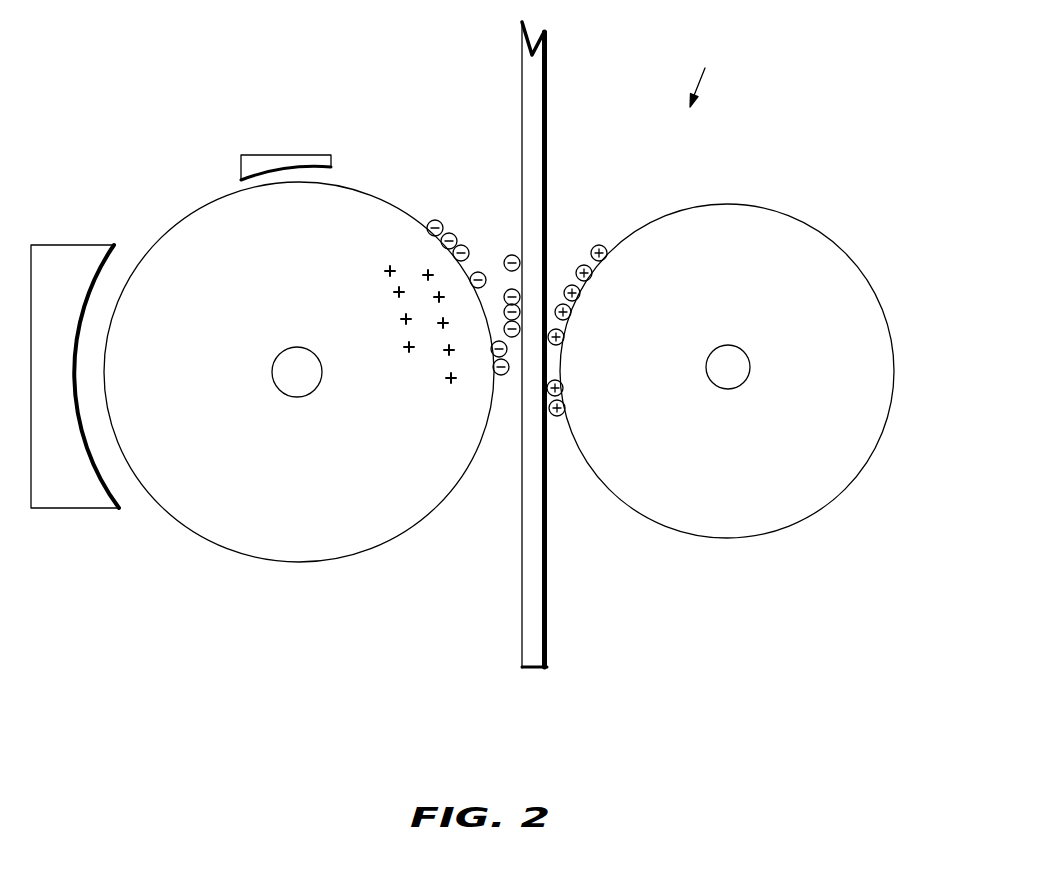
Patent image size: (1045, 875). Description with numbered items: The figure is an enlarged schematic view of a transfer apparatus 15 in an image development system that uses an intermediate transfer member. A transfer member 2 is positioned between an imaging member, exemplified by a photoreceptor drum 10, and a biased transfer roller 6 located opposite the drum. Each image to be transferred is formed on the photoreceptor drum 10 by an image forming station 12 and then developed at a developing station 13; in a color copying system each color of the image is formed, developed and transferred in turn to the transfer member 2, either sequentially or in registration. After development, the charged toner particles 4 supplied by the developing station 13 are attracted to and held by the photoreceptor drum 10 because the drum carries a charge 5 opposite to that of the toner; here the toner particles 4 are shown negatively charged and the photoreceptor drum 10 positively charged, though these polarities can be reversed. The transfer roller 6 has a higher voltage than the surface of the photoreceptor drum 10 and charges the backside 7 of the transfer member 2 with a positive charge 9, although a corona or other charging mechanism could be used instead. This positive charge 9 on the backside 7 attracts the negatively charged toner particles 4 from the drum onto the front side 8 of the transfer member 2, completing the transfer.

The transfer member 2 is at (532, 147).
The charged toner particles 4 is at (440, 225).
The charge 5 is at (391, 266).
The transfer roller 6 is at (680, 517).
The backside 7 is at (544, 60).
The front side 8 is at (518, 125).
The positive charge 9 is at (601, 246).
The photoreceptor drum 10 is at (273, 549).
The image forming station 12 is at (79, 260).
The developing station 13 is at (289, 157).
The transfer apparatus 15 is at (721, 66).